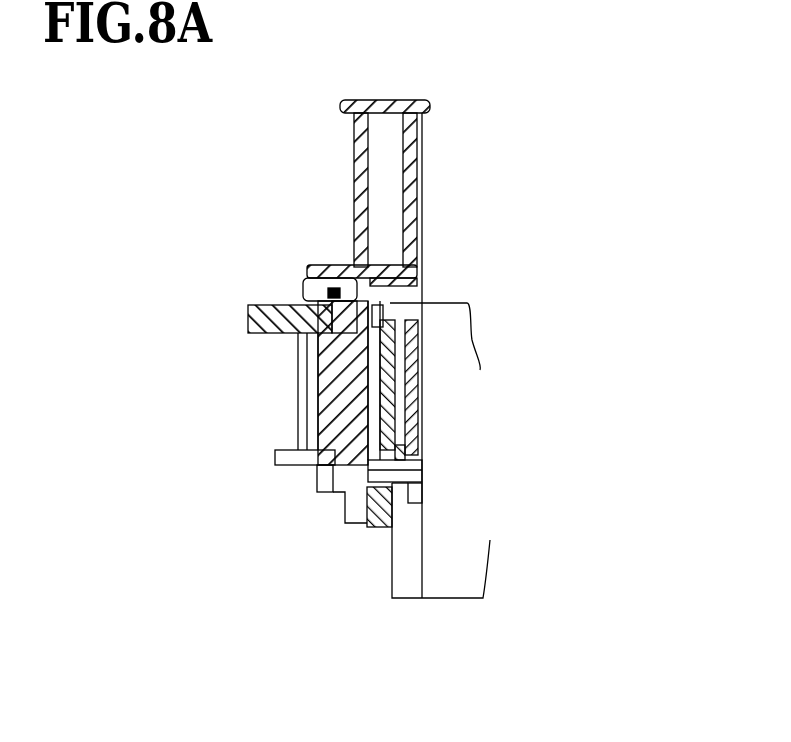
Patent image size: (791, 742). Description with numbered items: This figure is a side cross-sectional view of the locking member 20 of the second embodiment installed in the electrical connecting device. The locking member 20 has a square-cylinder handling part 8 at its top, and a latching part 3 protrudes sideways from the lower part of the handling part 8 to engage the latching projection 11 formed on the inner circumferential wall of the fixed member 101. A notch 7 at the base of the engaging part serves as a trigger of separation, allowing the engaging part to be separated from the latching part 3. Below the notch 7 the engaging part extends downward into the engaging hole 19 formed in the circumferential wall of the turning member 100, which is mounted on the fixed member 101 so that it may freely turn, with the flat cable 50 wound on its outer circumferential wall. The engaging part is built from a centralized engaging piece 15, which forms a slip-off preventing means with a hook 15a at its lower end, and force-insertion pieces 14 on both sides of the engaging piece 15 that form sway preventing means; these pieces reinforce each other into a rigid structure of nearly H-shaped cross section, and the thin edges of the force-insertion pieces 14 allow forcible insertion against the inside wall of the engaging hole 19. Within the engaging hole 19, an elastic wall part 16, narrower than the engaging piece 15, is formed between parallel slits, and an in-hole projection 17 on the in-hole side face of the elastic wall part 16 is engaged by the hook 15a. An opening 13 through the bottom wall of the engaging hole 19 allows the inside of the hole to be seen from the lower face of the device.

The locking member 20 is at (492, 170).
The handling part 8 is at (360, 160).
The latching part 3 is at (333, 264).
The latching projection 11 is at (306, 283).
The fixed member 101 is at (278, 308).
The flat cable 50 is at (298, 398).
The engaging hole 19 is at (353, 480).
The notch 7 is at (400, 305).
The force-insertion pieces 14 is at (402, 416).
The elastic wall part 16 is at (420, 378).
The in-hole projection 17 is at (404, 428).
The engaging piece 15 is at (390, 363).
The hook 15a is at (407, 460).
The opening 13 is at (392, 522).
The turning member 100 is at (467, 562).